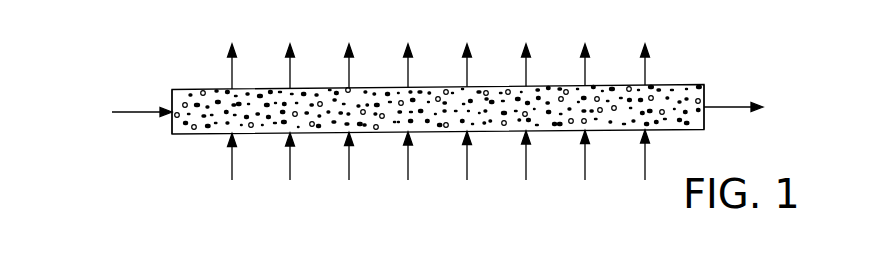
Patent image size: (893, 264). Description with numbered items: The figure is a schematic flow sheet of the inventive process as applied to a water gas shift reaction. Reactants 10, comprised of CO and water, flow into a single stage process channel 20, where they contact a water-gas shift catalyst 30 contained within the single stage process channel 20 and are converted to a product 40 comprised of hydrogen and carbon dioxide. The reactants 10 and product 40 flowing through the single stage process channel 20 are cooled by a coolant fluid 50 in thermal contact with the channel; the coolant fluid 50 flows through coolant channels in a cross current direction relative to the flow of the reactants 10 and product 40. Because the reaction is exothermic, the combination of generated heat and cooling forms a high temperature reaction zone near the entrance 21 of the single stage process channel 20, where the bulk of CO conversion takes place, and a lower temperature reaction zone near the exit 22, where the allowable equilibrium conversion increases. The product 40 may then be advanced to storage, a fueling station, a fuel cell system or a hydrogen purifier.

The reactants 10 is at (130, 112).
The single stage process channel 20 is at (313, 88).
The entrance 21 is at (172, 96).
The exit 22 is at (705, 118).
The catalyst 30 is at (438, 95).
The product 40 is at (730, 107).
The coolant fluid 50 is at (585, 68).